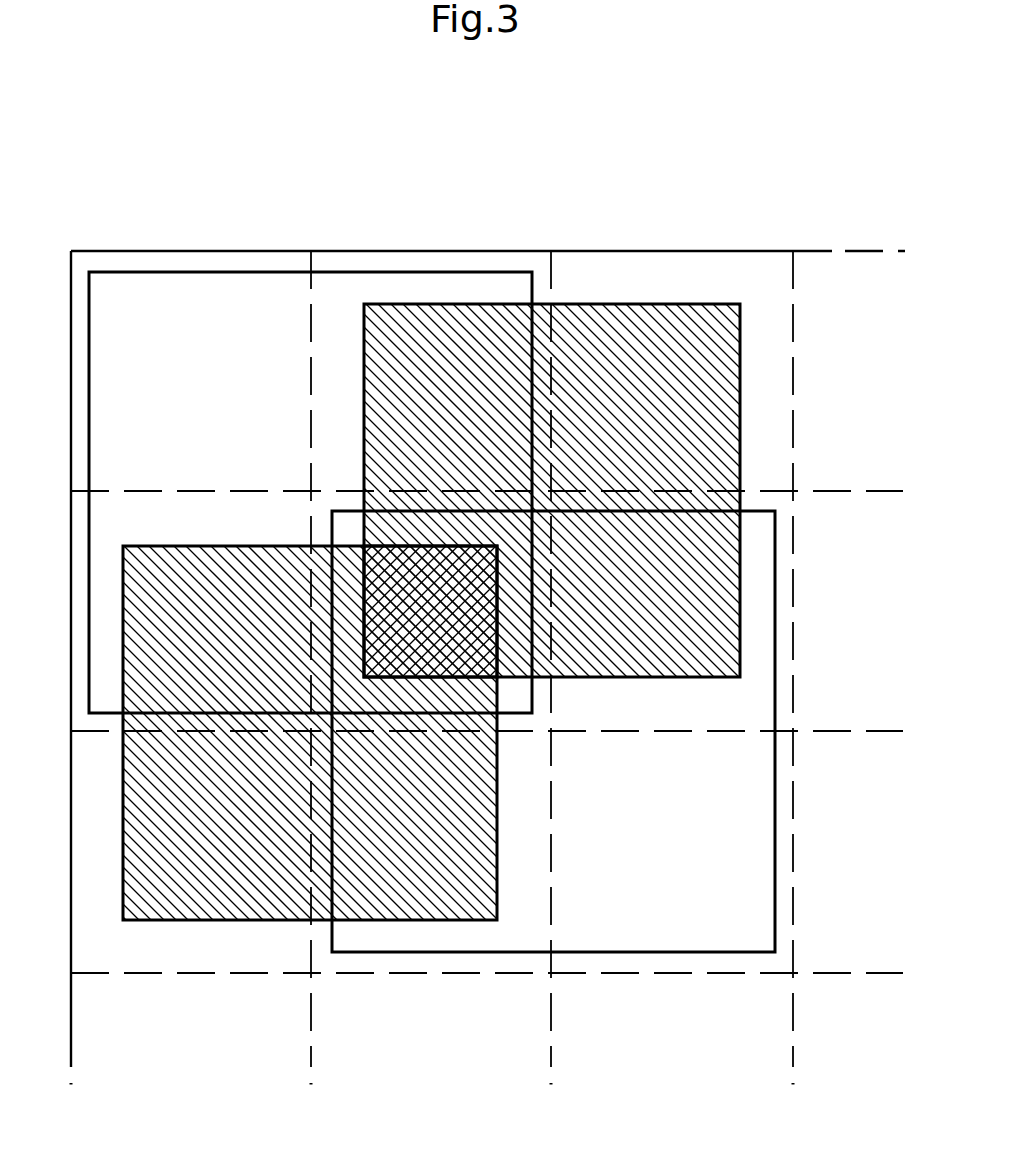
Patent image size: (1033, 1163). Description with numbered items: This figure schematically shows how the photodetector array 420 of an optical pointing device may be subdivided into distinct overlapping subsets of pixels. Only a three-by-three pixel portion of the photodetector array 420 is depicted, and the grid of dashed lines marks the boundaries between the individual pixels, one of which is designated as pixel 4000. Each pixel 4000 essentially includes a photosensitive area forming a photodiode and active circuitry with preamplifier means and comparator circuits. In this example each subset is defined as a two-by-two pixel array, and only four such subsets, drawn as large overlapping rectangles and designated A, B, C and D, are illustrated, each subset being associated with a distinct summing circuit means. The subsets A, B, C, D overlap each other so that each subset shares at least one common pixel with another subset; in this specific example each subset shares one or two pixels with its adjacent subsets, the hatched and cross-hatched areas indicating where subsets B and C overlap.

The photodetector array 420 is at (720, 222).
The first subset of pixels A is at (285, 272).
The second subset of pixels B is at (620, 303).
The third subset of pixels C is at (273, 922).
The fourth subset of pixels D is at (685, 953).
The pixel 4000 is at (192, 948).